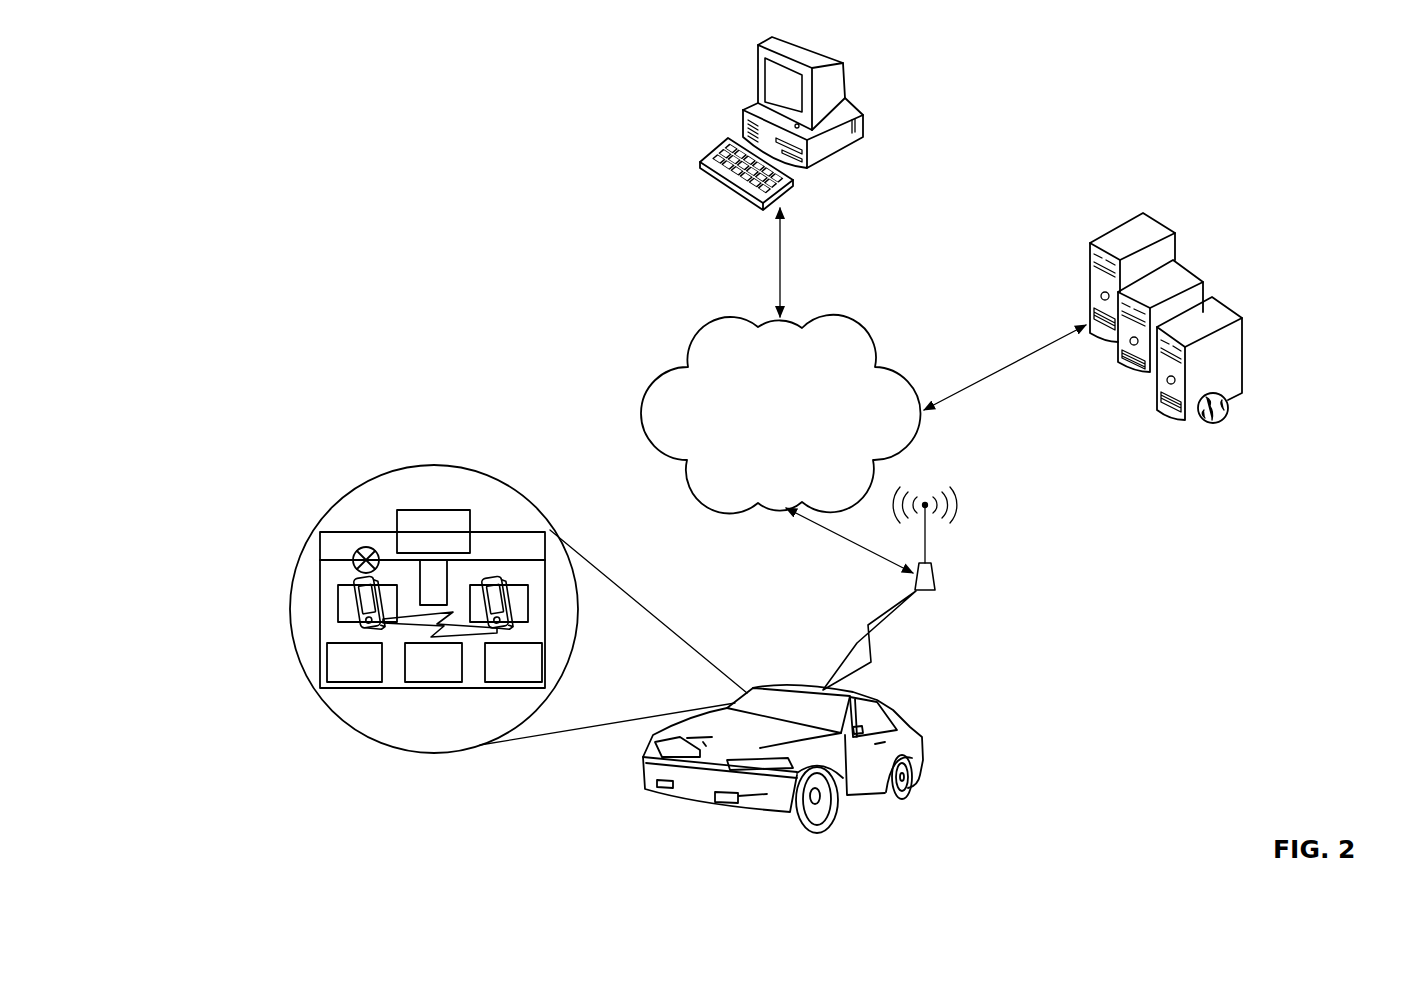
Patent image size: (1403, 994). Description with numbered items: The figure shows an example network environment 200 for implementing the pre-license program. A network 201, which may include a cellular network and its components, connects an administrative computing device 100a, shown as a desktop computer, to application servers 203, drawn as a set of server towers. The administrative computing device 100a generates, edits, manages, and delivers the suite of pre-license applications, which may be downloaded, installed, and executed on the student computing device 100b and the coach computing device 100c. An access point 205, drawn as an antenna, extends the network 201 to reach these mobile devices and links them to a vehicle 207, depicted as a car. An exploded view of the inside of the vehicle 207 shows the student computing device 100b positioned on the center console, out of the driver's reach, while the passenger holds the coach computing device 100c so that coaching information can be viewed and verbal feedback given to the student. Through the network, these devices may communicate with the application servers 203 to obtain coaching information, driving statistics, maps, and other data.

The network environment 200 is at (370, 108).
The administrative computing device 100a is at (757, 70).
The student computing device 100b is at (367, 602).
The coach computing device 100c is at (497, 603).
The network 201 is at (838, 320).
The application servers 203 is at (1122, 223).
The access points 205 is at (937, 583).
The vehicle 207 is at (787, 682).